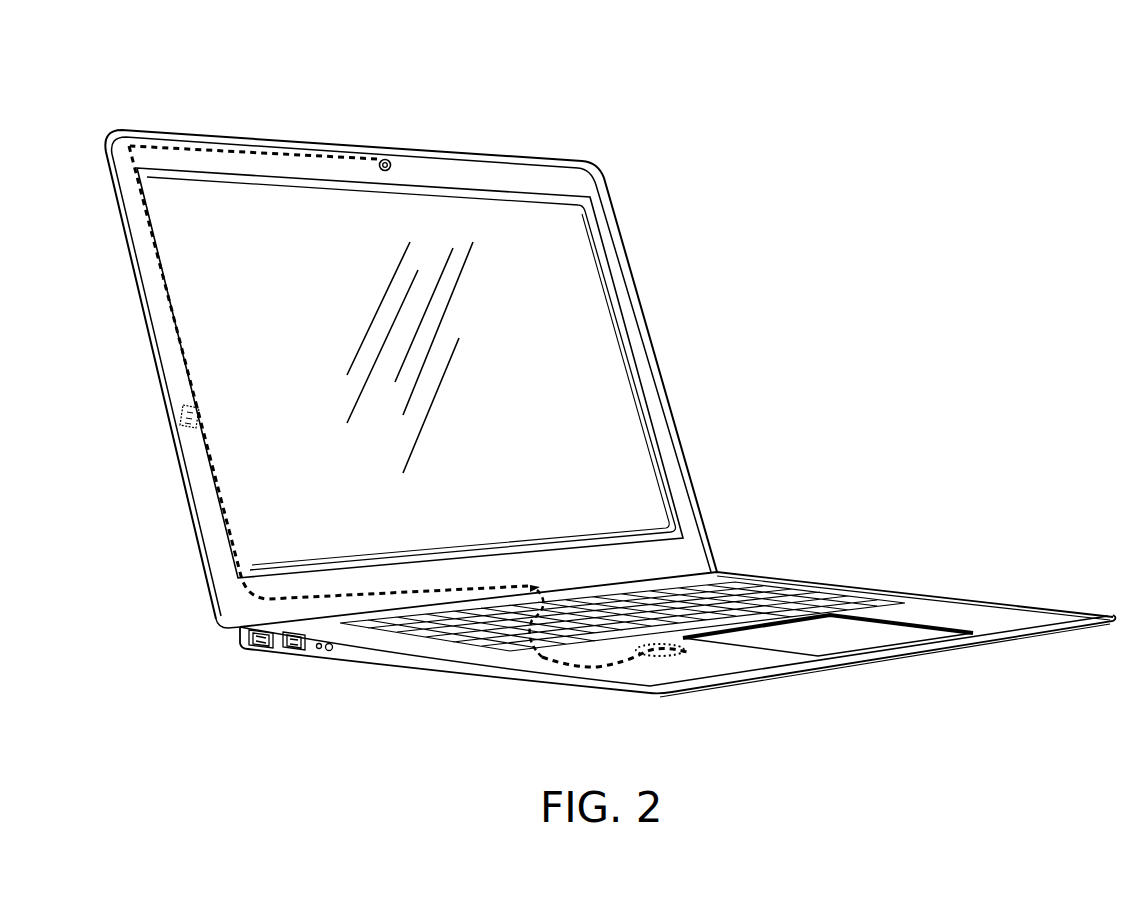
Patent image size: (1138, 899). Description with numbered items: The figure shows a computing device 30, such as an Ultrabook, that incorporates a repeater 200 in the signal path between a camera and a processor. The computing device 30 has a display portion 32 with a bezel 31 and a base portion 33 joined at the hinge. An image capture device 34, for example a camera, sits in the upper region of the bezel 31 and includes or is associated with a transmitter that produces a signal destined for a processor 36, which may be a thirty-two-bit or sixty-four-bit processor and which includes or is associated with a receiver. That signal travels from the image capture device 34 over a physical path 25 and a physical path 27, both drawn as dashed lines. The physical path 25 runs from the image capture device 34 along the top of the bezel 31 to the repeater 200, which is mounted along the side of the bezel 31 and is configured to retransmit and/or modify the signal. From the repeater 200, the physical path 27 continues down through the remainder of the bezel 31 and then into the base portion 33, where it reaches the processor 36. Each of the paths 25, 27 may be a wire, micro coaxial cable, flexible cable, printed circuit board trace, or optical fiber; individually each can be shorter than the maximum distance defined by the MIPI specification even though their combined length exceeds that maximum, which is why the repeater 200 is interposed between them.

The computing device 30 is at (583, 375).
The bezel 31 is at (586, 184).
The display portion 32 is at (632, 229).
The base portion 33 is at (956, 572).
The image capture device 34 is at (386, 160).
The physical path 25 is at (179, 152).
The physical path 27 is at (222, 515).
The repeater 200 is at (182, 420).
The processor 36 is at (668, 652).